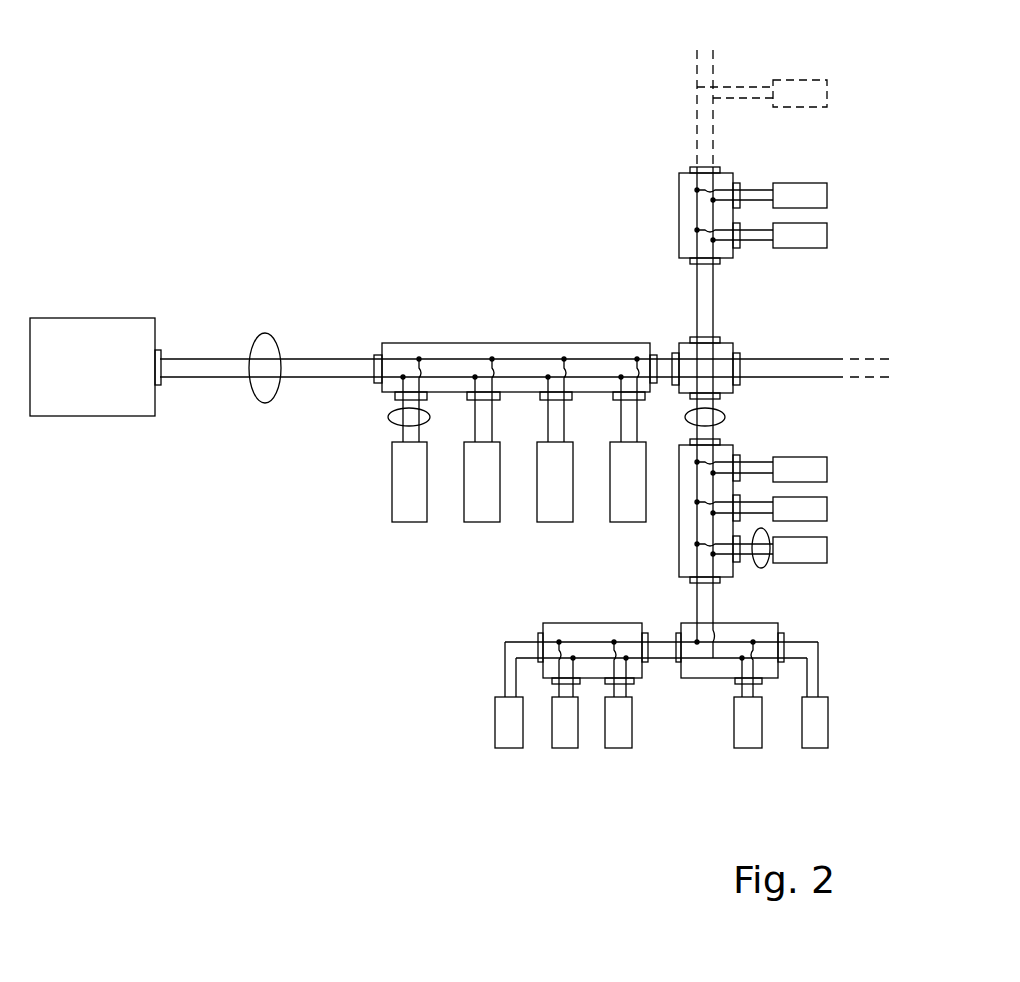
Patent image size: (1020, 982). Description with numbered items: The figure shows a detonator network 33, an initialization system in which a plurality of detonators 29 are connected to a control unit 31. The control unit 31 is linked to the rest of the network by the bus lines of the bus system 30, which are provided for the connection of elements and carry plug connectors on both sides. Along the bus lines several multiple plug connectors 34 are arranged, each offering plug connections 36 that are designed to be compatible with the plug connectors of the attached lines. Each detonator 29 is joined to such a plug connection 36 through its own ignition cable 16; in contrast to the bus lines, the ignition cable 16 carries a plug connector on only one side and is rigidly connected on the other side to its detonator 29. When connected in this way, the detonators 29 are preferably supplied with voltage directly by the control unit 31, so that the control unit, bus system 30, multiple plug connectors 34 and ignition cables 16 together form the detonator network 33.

The ignition cable 16 is at (388, 417).
The detonator 29 is at (410, 505).
The bus system 30 is at (266, 333).
The control unit 31 is at (80, 382).
The detonator network 33 is at (288, 80).
The multiple plug connector 34 is at (450, 343).
The plug connection 36 is at (160, 385).